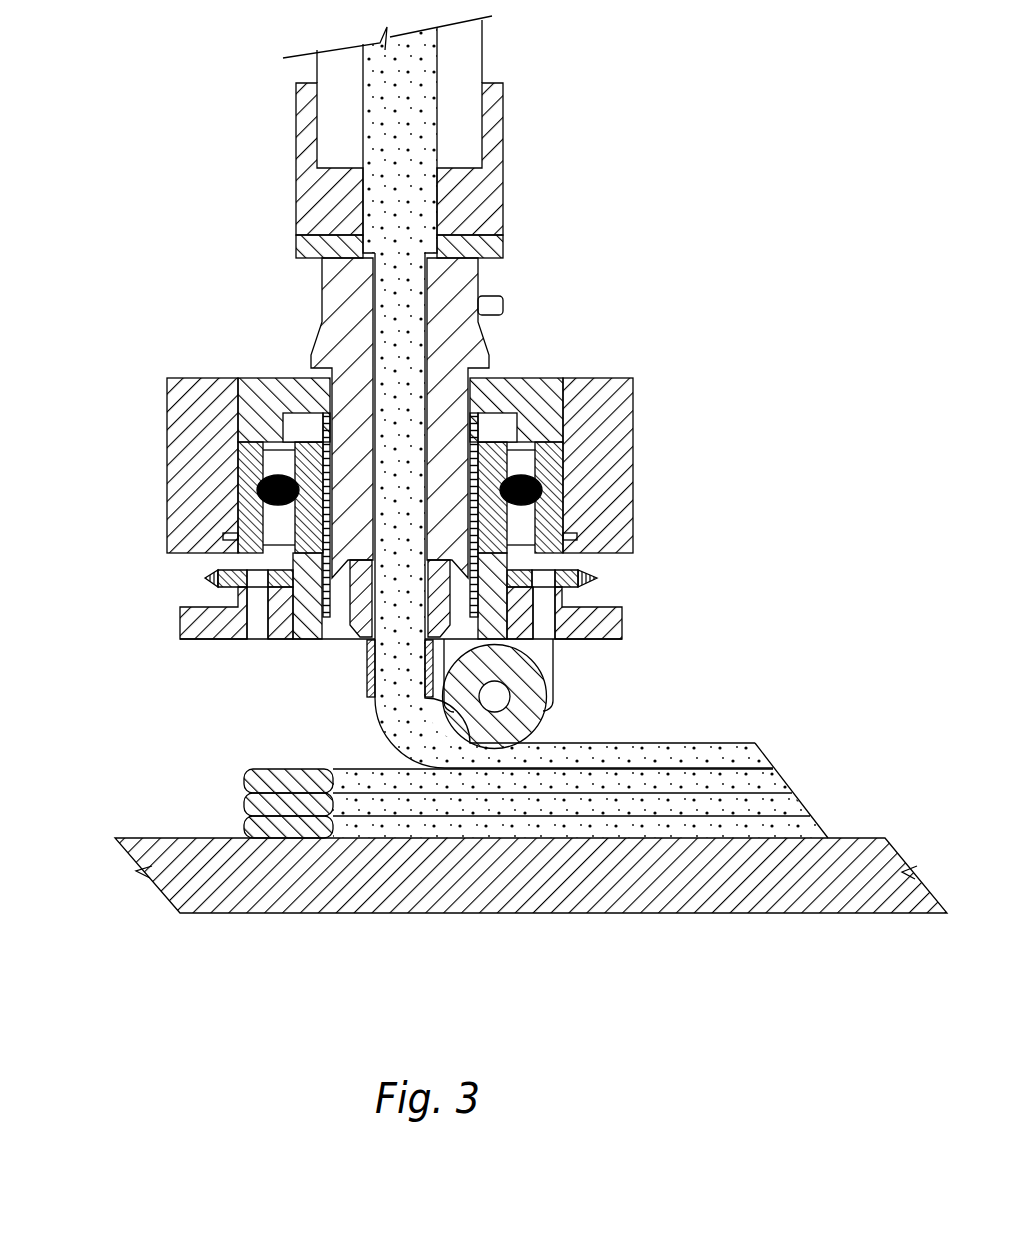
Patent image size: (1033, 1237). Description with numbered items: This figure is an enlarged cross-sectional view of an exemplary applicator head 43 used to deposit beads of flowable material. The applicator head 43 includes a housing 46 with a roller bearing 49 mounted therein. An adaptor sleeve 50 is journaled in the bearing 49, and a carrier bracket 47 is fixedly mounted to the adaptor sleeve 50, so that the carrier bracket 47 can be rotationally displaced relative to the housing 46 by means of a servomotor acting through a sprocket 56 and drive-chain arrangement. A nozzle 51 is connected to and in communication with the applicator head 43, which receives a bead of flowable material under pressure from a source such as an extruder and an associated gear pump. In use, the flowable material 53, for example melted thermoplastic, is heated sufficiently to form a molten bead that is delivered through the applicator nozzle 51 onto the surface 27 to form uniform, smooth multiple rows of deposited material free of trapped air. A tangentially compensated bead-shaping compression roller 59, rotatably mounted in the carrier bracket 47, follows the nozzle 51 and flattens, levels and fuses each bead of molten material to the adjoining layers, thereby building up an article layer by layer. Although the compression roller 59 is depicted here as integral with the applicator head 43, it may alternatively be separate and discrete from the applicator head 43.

The surface 27 is at (168, 837).
The applicator head 43 is at (665, 478).
The housing 46 is at (167, 455).
The carrier bracket 47 is at (147, 620).
The roller bearing 49 is at (560, 462).
The adaptor sleeve 50 is at (338, 588).
The nozzle 51 is at (367, 683).
The flowable material 53 is at (378, 733).
The sprocket 56 is at (603, 580).
The bead-shaping compression roller 59 is at (546, 727).